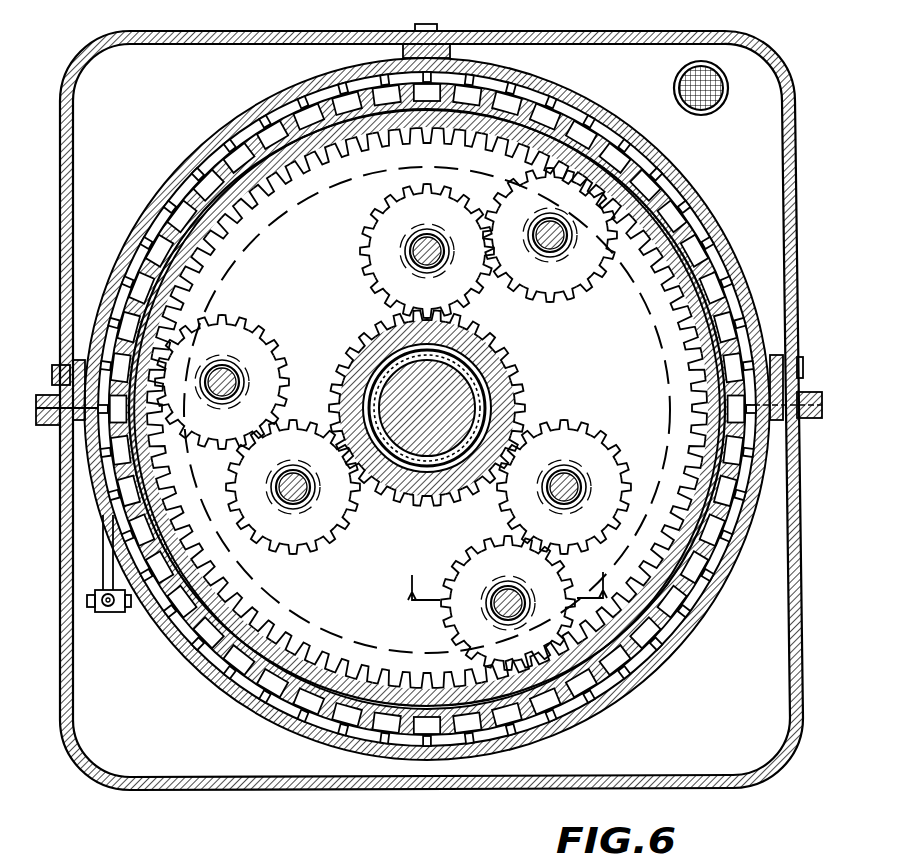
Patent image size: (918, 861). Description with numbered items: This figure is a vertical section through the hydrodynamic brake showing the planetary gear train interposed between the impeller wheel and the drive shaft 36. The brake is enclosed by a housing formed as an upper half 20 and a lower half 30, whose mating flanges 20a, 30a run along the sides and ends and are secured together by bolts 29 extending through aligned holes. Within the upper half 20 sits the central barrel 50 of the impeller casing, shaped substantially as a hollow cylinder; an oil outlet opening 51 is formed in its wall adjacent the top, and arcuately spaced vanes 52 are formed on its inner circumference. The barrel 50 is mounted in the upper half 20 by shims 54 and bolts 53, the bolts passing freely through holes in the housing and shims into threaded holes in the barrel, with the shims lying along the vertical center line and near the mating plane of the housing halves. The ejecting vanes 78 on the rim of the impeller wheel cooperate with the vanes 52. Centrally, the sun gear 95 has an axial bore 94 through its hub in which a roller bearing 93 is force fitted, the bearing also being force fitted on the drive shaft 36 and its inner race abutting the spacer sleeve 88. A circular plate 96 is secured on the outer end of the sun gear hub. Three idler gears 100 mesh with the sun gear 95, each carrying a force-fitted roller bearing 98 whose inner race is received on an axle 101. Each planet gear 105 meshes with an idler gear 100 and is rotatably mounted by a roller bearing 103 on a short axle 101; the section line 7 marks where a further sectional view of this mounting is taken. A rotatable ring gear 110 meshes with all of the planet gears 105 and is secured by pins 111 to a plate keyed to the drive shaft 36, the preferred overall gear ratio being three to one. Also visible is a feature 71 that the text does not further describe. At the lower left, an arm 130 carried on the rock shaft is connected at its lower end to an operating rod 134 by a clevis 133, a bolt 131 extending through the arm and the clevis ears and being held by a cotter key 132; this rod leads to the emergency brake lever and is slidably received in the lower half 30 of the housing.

The upper half of housing 20 is at (672, 36).
The mating flange 20a is at (62, 370).
The bolts 29 is at (808, 392).
The lower half of housing 30 is at (428, 792).
The mating flange 30a is at (58, 430).
The drive shaft 36 is at (385, 370).
The central barrel 50 is at (426, 409).
The oil outlet opening 51 is at (426, 409).
The arcuately spaced vanes 52 is at (578, 90).
The bolts 53 is at (415, 27).
The shims 54 is at (445, 45).
The port 71 is at (640, 140).
The ejecting vanes 78 is at (427, 409).
The spacer sleeve 88 is at (350, 385).
The roller bearing 93 is at (475, 345).
The axial bore 94 is at (495, 375).
The sun gear 95 is at (510, 400).
The circular plate 96 is at (427, 408).
The roller bearing 98 is at (412, 252).
The idler gears 100 is at (362, 240).
The axles 101 is at (427, 248).
The roller bearings 103 is at (545, 230).
The planet gears 105 is at (595, 280).
The ring gear 110 is at (368, 150).
The pins 111 is at (427, 408).
The section line 7- 7 is at (507, 575).
The arm 130 is at (110, 546).
The bolt 131 is at (112, 612).
The cotter key 132 is at (100, 588).
The clevis 133 is at (135, 627).
The operating rod 134 is at (105, 612).